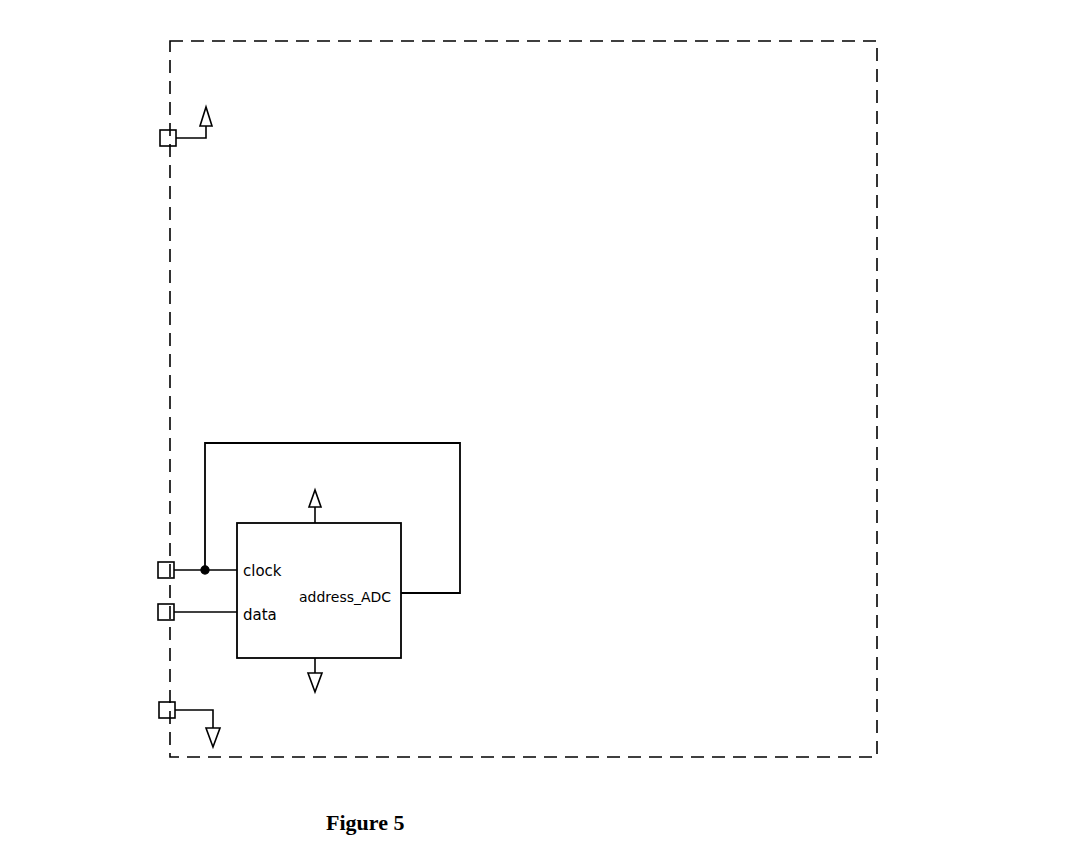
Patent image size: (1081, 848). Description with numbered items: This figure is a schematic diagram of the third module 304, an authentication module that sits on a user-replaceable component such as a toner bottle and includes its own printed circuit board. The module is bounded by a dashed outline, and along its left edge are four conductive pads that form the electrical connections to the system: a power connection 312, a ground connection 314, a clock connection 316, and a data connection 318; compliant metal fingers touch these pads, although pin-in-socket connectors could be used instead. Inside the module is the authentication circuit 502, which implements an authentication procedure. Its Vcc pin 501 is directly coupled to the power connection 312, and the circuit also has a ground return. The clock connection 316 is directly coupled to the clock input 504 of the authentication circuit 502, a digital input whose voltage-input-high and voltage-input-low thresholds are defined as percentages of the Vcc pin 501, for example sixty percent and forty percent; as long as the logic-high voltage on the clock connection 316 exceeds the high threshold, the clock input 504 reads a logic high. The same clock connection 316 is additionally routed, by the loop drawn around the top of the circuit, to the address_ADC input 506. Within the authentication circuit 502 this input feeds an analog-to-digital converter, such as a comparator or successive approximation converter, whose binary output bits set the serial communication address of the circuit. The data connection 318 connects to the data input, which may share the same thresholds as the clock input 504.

The third module 304 is at (968, 60).
The power connection 312 is at (166, 130).
The ground connection 314 is at (160, 702).
The clock connection 316 is at (165, 561).
The data connection 318 is at (176, 620).
The Vcc pin 501 is at (313, 521).
The authentication circuit 502 is at (338, 660).
The clock input 504 is at (235, 567).
The address_ADC input 506 is at (401, 593).